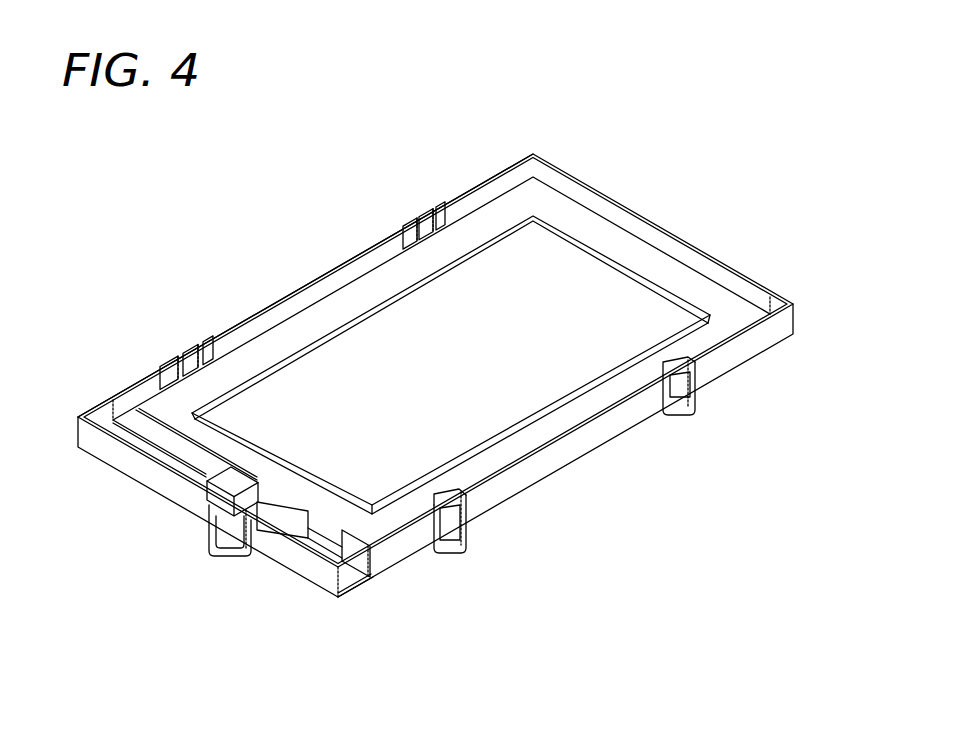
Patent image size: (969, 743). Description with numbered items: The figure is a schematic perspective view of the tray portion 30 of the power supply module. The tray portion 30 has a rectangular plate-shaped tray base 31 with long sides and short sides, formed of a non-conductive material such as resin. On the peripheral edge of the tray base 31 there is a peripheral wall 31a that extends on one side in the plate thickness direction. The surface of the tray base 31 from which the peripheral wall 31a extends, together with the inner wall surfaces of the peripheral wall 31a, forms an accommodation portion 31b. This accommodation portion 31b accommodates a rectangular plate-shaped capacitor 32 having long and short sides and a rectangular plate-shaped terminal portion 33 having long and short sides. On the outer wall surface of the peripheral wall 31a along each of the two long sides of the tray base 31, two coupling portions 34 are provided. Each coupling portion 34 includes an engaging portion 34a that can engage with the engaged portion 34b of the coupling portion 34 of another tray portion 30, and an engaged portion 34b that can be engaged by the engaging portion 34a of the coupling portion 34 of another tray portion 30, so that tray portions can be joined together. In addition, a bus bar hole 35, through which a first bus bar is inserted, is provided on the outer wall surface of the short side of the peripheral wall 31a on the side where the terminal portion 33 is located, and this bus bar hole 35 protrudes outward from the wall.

The tray portion 30 is at (714, 163).
The tray base 31 is at (94, 460).
The peripheral wall 31a is at (295, 303).
The accommodation portion 31b is at (160, 397).
The capacitor 32 is at (618, 292).
The terminal portion 33 is at (313, 542).
The coupling portion 34 is at (795, 398).
The engaging portion 34a is at (680, 417).
The engaged portion 34b is at (697, 368).
The bus bar hole 35 is at (238, 520).